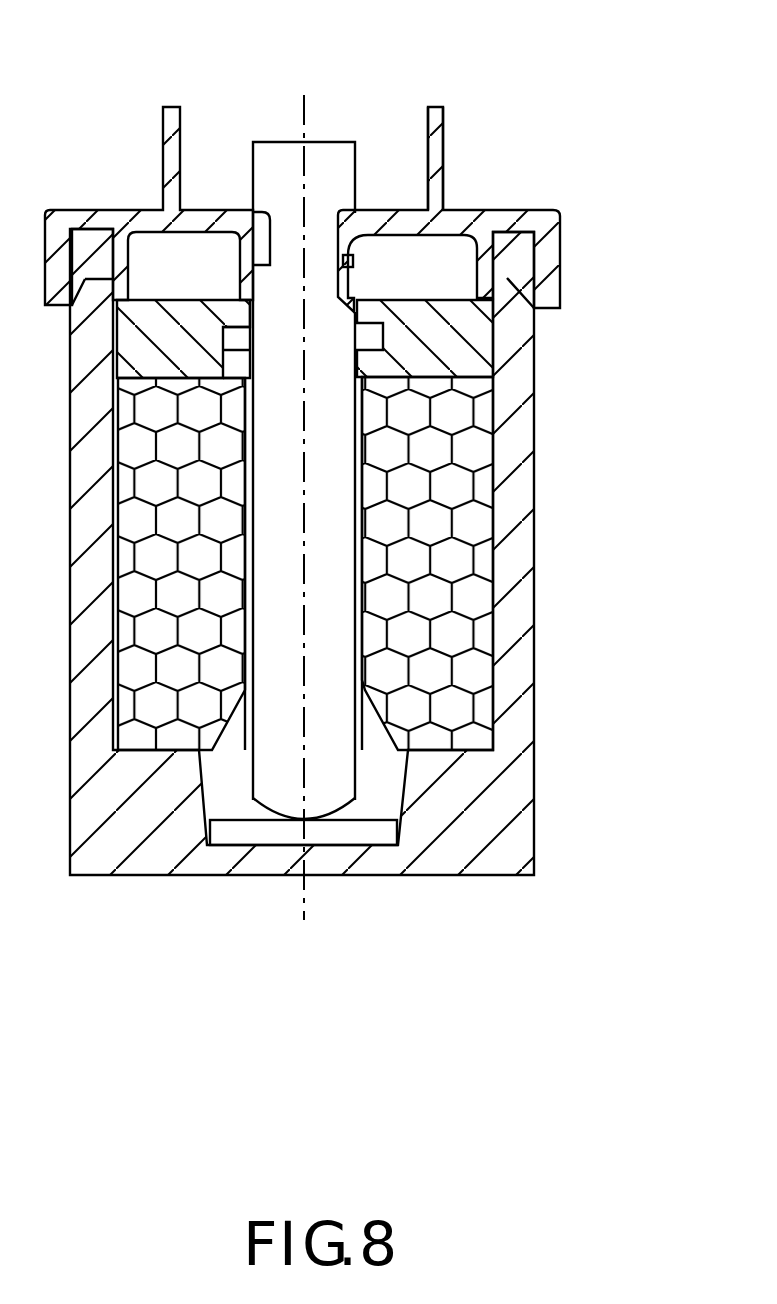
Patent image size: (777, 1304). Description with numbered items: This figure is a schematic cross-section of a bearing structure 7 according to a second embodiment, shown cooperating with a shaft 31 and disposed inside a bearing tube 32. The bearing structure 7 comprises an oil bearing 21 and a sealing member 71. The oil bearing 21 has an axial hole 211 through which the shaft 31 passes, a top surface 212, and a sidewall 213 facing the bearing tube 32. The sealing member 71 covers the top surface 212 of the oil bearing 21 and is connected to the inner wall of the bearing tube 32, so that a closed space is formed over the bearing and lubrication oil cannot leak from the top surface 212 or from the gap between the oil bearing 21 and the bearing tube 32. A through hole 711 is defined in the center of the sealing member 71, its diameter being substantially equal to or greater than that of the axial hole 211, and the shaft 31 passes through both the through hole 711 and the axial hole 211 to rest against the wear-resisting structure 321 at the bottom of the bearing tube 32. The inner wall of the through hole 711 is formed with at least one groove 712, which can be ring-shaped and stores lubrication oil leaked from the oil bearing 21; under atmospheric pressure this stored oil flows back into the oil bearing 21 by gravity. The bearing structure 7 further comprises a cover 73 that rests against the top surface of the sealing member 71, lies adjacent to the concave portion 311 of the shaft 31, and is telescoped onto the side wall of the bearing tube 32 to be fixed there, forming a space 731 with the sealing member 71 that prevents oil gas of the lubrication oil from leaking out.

The bearing structure 7 is at (65, 133).
The sealing member 71 is at (158, 313).
The through hole 711 is at (240, 297).
The groove 712 is at (227, 300).
The oil bearing 21 is at (227, 385).
The axial hole 211 is at (502, 285).
The top surface 212 is at (400, 378).
The sidewall 213 is at (495, 520).
The shaft 31 is at (330, 153).
The concave portion 311 is at (343, 258).
The bearing tube 32 is at (355, 428).
The wear-resisting structure 321 is at (338, 838).
The cover 73 is at (540, 216).
The space 731 is at (451, 262).